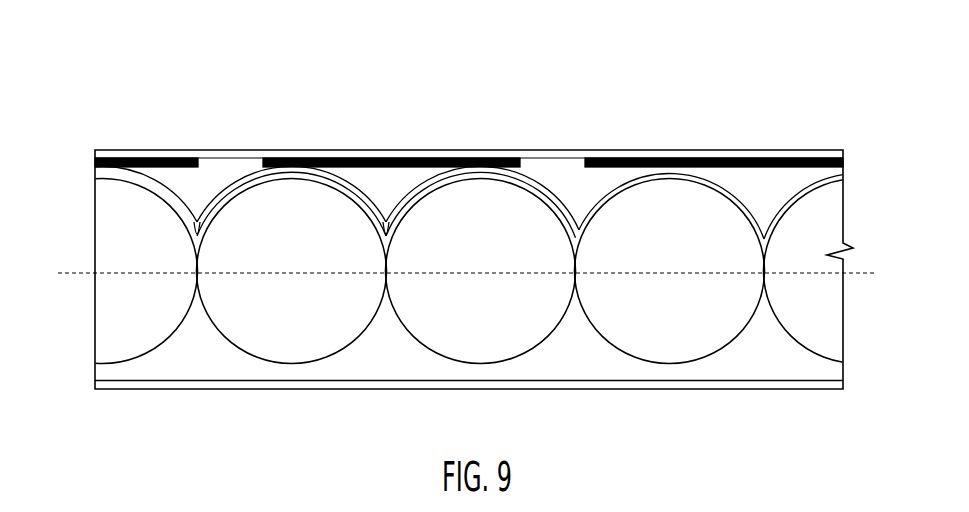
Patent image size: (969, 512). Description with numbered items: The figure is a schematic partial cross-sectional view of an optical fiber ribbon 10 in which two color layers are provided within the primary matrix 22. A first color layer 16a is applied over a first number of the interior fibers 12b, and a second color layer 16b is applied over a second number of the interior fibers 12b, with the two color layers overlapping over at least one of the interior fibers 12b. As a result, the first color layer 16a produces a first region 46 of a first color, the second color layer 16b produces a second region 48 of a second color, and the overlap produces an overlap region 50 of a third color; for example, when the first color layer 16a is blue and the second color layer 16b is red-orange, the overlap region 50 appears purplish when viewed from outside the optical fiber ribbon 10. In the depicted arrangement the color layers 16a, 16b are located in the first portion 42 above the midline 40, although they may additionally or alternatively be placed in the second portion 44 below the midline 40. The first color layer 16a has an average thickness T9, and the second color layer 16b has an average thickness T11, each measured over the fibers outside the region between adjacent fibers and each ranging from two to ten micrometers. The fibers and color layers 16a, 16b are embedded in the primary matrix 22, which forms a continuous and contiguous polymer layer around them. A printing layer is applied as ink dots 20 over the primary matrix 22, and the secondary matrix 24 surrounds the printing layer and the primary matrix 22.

The optical fiber ribbon 10 is at (784, 82).
The interior fibers 12b is at (237, 320).
The first color layer 16a is at (393, 200).
The second color layer 16b is at (690, 176).
The ink dots 20 is at (622, 158).
The primary matrix 22 is at (583, 357).
The secondary matrix 24 is at (698, 383).
The midline 40 is at (81, 271).
The first portion 42 is at (862, 218).
The second portion 44 is at (860, 312).
The first region 46 is at (173, 176).
The second region 48 is at (787, 180).
The overlap region 50 is at (582, 203).
The average thickness of first color layer T9 is at (333, 218).
The average thickness of second color layer T11 is at (712, 230).